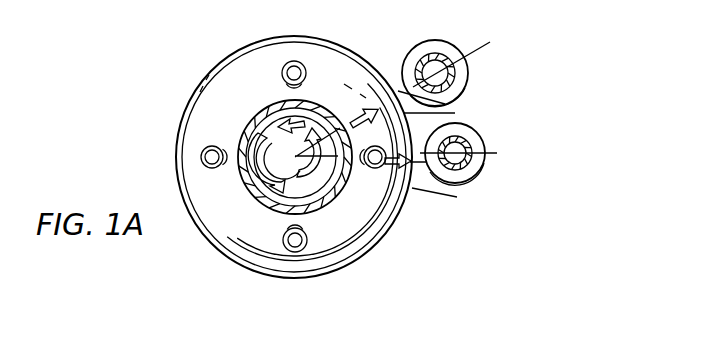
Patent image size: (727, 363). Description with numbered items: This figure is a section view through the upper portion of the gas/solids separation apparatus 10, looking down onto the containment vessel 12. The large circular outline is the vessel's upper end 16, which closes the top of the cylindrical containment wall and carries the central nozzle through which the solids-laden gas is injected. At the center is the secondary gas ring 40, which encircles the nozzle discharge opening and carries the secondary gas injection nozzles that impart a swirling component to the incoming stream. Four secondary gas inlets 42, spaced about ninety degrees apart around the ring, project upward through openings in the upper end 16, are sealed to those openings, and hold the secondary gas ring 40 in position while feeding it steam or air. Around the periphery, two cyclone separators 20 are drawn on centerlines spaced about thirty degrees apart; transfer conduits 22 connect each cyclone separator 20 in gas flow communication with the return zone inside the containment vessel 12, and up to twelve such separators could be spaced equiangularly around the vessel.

The gas/solids separation apparatus 10 is at (528, 101).
The containment vessel 12 is at (173, 157).
The upper end 16 is at (219, 52).
The cyclone separators 20 is at (463, 48).
The transfer conduits 22 is at (455, 113).
The secondary gas ring 40 is at (274, 107).
The secondary gas inlets 42 is at (308, 66).